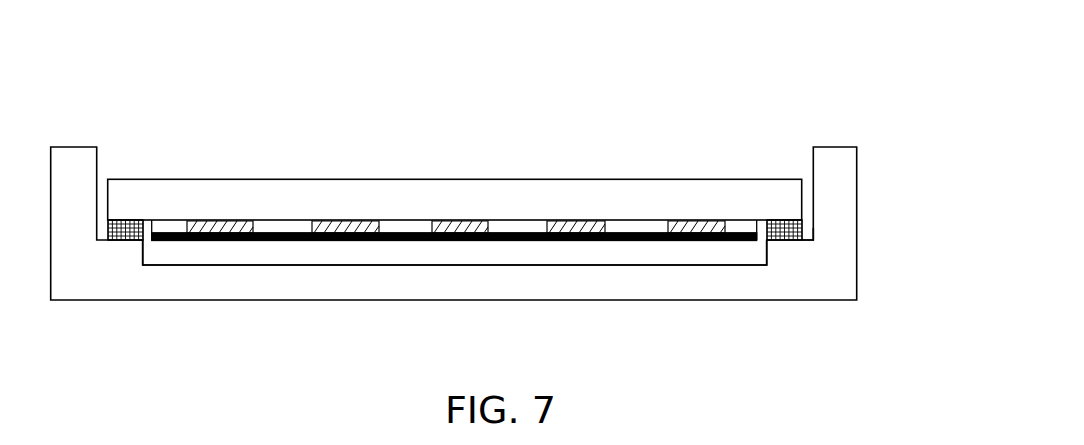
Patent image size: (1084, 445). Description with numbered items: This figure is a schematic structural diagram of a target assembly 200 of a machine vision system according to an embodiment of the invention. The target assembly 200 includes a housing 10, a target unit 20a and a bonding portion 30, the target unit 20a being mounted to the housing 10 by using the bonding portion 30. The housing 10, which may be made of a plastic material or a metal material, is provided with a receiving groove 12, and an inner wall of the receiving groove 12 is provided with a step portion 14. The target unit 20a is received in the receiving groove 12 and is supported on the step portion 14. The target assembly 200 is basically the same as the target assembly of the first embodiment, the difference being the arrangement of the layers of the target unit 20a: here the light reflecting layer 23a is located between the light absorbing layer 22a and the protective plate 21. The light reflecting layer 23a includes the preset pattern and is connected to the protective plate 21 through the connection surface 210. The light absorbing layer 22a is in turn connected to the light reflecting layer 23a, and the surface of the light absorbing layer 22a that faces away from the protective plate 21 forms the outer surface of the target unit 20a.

The target assembly 200 is at (655, 86).
The housing 10 is at (840, 277).
The receiving groove 12 is at (722, 257).
The step portion 14 is at (808, 238).
The bonding portion 30 is at (788, 220).
The target unit 20a is at (552, 108).
The protective plate 21 is at (370, 195).
The light absorbing layer 22a is at (533, 233).
The light reflecting layer 23a is at (450, 223).
The connection surface 210 is at (278, 222).